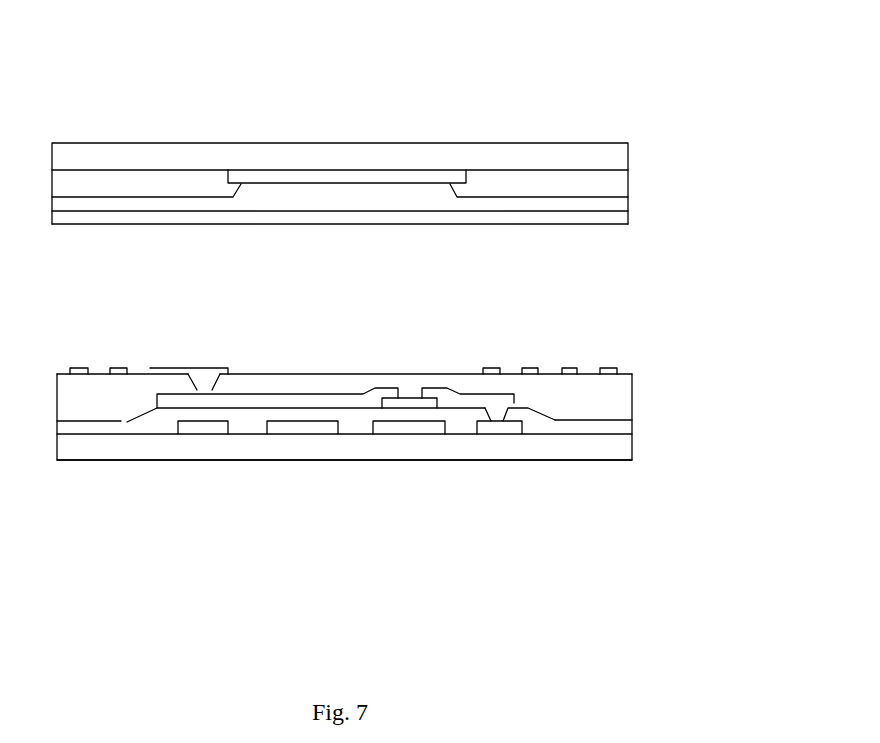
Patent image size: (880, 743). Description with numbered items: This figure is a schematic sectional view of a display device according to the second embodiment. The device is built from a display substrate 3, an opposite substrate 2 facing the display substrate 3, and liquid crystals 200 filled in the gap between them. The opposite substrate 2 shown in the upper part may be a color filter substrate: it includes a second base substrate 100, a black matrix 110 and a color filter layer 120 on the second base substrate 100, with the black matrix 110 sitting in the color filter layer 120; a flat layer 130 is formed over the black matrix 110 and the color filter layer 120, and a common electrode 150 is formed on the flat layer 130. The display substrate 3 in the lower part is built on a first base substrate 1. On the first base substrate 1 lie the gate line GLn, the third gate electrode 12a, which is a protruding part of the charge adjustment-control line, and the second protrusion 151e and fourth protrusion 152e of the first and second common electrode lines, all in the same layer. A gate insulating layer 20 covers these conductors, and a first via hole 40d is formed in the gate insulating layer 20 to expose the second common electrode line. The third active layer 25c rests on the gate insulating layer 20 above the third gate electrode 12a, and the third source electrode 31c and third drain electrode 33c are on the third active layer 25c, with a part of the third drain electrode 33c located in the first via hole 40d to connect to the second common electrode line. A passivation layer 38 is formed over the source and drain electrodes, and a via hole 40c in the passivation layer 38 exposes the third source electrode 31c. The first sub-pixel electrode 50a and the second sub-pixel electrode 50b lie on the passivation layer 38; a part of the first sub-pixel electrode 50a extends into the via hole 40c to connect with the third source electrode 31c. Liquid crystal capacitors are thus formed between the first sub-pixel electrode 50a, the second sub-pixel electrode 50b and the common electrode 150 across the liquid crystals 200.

The opposite substrate 2 is at (282, 117).
The black matrix 110 is at (362, 177).
The second base substrate 100 is at (608, 150).
The color filter layer 120 is at (617, 181).
The flat layer 130 is at (613, 200).
The common electrode 150 is at (620, 218).
The liquid crystals 200 is at (573, 262).
The display substrate 3 is at (390, 513).
The passivation layer 38 is at (615, 395).
The gate insulating layer 20 is at (615, 428).
The first base substrate 1 is at (615, 446).
The second protrusion 151e is at (207, 424).
The gate line GLn is at (300, 428).
The third gate electrode 12a is at (402, 428).
The fourth protrusion 152e is at (490, 425).
The third source electrode 31c is at (275, 398).
The third active layer 25c is at (415, 408).
The third drain electrode 33c is at (462, 405).
The first via hole 40d is at (487, 383).
The via hole 40c is at (207, 380).
The first sub-pixel electrode 50a is at (75, 368).
The second sub-pixel electrode 50b is at (575, 368).